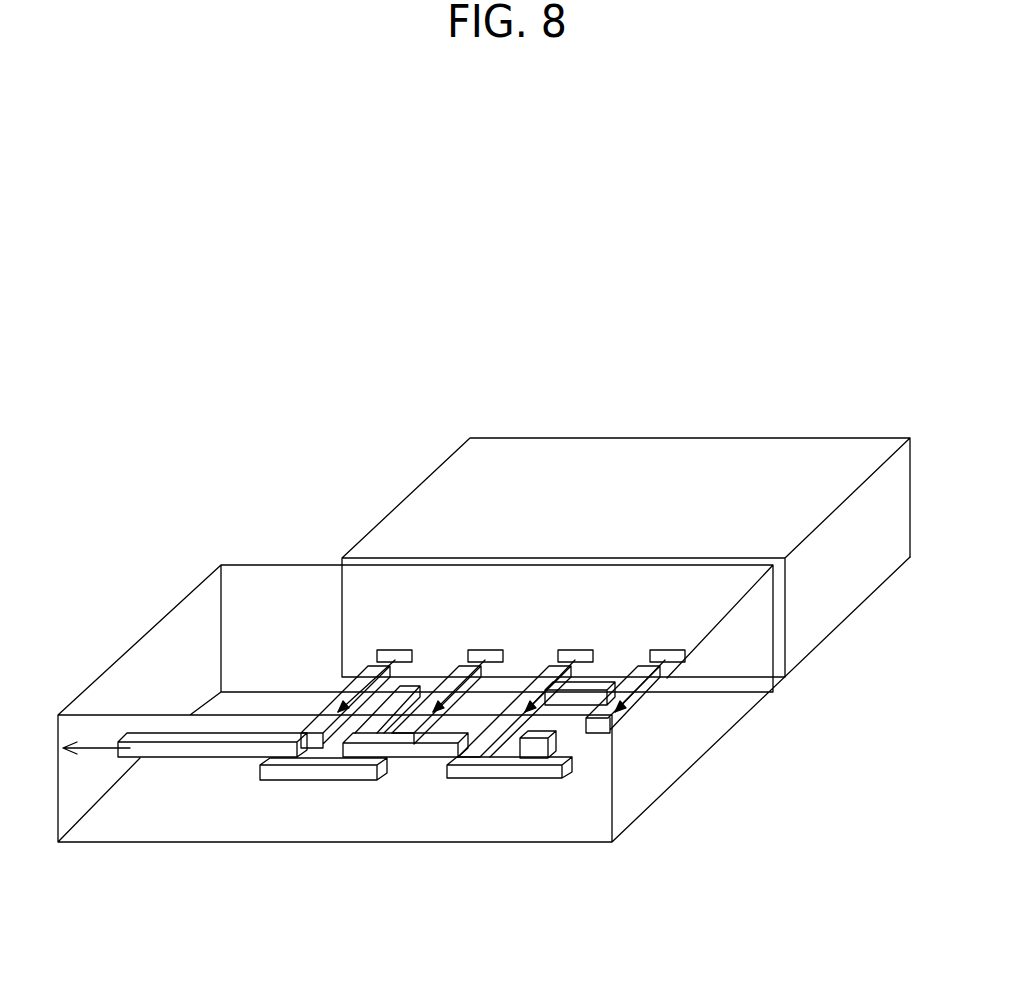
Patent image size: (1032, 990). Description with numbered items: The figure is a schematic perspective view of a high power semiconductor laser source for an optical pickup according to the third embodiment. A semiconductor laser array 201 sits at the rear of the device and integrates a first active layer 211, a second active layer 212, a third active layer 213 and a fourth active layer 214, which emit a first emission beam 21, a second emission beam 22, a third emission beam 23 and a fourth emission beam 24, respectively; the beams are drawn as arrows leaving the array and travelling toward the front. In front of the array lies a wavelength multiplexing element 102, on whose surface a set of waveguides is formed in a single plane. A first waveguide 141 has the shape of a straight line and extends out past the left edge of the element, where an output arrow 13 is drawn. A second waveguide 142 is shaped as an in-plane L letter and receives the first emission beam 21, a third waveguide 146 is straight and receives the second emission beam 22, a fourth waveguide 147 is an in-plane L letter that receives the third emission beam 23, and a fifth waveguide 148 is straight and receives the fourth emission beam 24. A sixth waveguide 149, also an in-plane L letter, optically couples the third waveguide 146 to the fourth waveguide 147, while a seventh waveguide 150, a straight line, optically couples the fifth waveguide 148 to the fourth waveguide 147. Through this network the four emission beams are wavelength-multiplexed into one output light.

The wavelength multiplexing element 102 is at (157, 620).
The semiconductor laser array 201 is at (856, 440).
The light propagation direction 13 is at (83, 752).
The first waveguide 141 is at (220, 760).
The second waveguide 142 is at (330, 782).
The third waveguide 146 is at (433, 680).
The fourth waveguide 147 is at (498, 782).
The fifth waveguide 148 is at (653, 697).
The sixth waveguide 149 is at (418, 760).
The seventh waveguide 150 is at (570, 743).
The first emission beam 21 is at (350, 677).
The second emission beam 22 is at (457, 672).
The third emission beam 23 is at (548, 667).
The fourth emission beam 24 is at (620, 693).
The first active layer 211 is at (387, 647).
The second active layer 212 is at (483, 650).
The third active layer 213 is at (570, 650).
The fourth active layer 214 is at (665, 650).